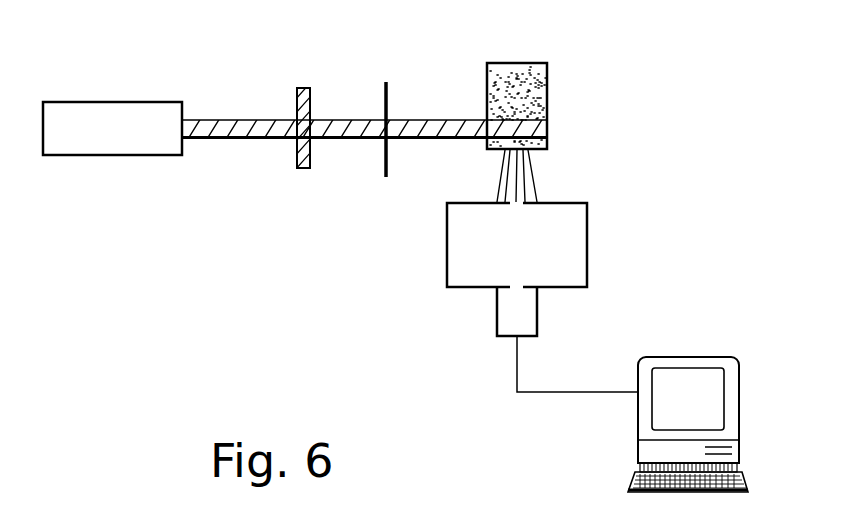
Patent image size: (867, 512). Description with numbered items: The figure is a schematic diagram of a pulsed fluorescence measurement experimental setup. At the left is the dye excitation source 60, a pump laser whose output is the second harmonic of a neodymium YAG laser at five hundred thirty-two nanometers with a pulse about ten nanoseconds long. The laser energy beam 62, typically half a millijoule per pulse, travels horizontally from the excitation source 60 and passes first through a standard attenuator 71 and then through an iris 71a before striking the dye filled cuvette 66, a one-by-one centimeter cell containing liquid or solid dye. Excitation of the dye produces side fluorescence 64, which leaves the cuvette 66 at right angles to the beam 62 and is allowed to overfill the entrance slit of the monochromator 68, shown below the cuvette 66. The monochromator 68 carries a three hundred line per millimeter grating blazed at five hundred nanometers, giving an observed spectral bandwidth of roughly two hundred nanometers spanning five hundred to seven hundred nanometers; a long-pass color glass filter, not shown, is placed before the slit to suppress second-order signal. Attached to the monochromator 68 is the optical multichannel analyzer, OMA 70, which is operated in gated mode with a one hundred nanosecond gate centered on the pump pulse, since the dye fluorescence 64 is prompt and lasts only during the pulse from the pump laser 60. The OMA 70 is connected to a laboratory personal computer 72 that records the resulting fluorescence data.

The dye excitation source 60 is at (128, 142).
The laser energy beam 62 is at (210, 139).
The attenuator 71 is at (300, 84).
The IRIS 71a is at (385, 77).
The dye filled cuvette 66 is at (547, 79).
The side fluorescence 64 is at (546, 172).
The monochromator 68 is at (531, 255).
The optical multichannel analyzer (OMA) 70 is at (537, 297).
The laboratory personal computer 72 is at (739, 378).